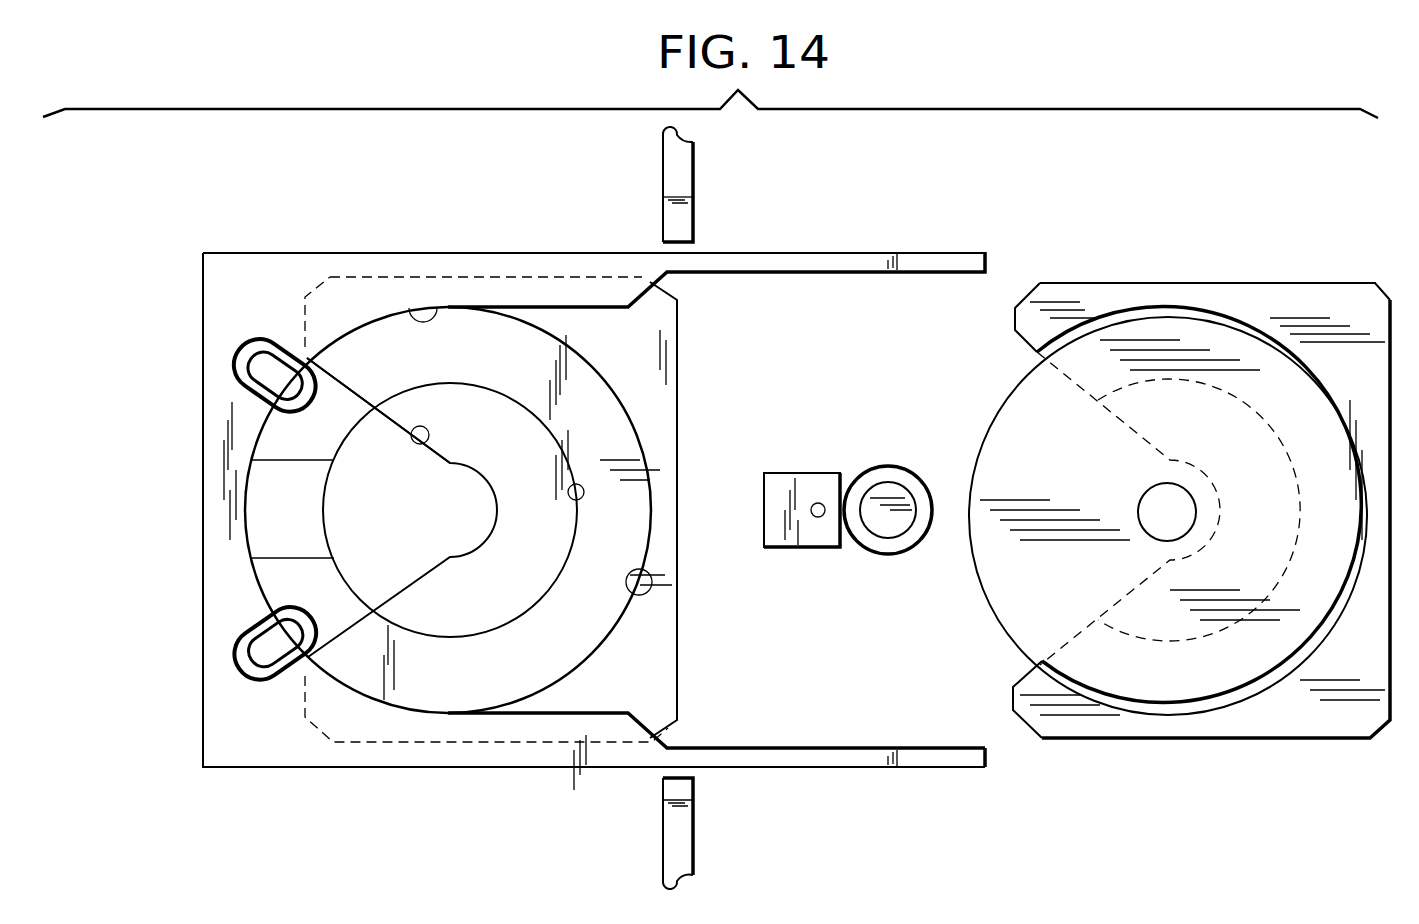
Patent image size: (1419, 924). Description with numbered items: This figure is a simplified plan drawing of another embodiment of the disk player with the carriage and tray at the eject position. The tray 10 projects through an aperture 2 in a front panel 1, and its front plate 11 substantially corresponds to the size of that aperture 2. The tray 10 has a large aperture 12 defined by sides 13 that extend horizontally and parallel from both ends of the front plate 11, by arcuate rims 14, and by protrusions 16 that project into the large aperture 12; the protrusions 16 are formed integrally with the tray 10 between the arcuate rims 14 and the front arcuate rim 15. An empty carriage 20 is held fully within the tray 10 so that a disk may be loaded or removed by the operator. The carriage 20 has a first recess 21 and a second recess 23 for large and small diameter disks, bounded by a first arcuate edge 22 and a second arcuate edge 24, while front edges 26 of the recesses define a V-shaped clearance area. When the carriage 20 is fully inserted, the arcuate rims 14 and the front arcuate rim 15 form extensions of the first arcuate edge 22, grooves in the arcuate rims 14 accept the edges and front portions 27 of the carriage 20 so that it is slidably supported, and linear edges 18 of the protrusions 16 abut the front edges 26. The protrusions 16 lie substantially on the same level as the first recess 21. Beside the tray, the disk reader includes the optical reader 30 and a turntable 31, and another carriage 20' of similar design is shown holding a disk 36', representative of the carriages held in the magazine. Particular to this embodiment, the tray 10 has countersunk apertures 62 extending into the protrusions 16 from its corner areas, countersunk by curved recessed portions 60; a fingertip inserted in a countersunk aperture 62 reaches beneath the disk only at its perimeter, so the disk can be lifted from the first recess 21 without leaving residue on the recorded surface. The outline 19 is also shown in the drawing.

The front panel 1 is at (670, 168).
The aperture 2 is at (663, 250).
The tray 10 is at (533, 243).
The front plate 11 is at (203, 595).
The large aperture 12 is at (825, 696).
The sides 13 is at (845, 252).
The arcuate rims 14 is at (450, 307).
The front arcuate rim 15 is at (262, 490).
The protrusions 16 is at (322, 444).
The linear edges 18 is at (313, 365).
The hidden edge 19 is at (325, 278).
The carriage 20 is at (511, 548).
The carriage 20' is at (1201, 484).
The first recess 21 is at (568, 644).
The first arcuate edge 22 is at (660, 585).
The second recess 23 is at (515, 590).
The second arcuate edge 24 is at (582, 494).
The front edges 26 is at (430, 440).
The front portions 27 is at (313, 297).
The optical reader 30 is at (785, 478).
The turntable 31 is at (898, 470).
The disk 36' is at (1152, 516).
The recessed portions 60 is at (240, 372).
The countersunk apertures 62 is at (255, 370).